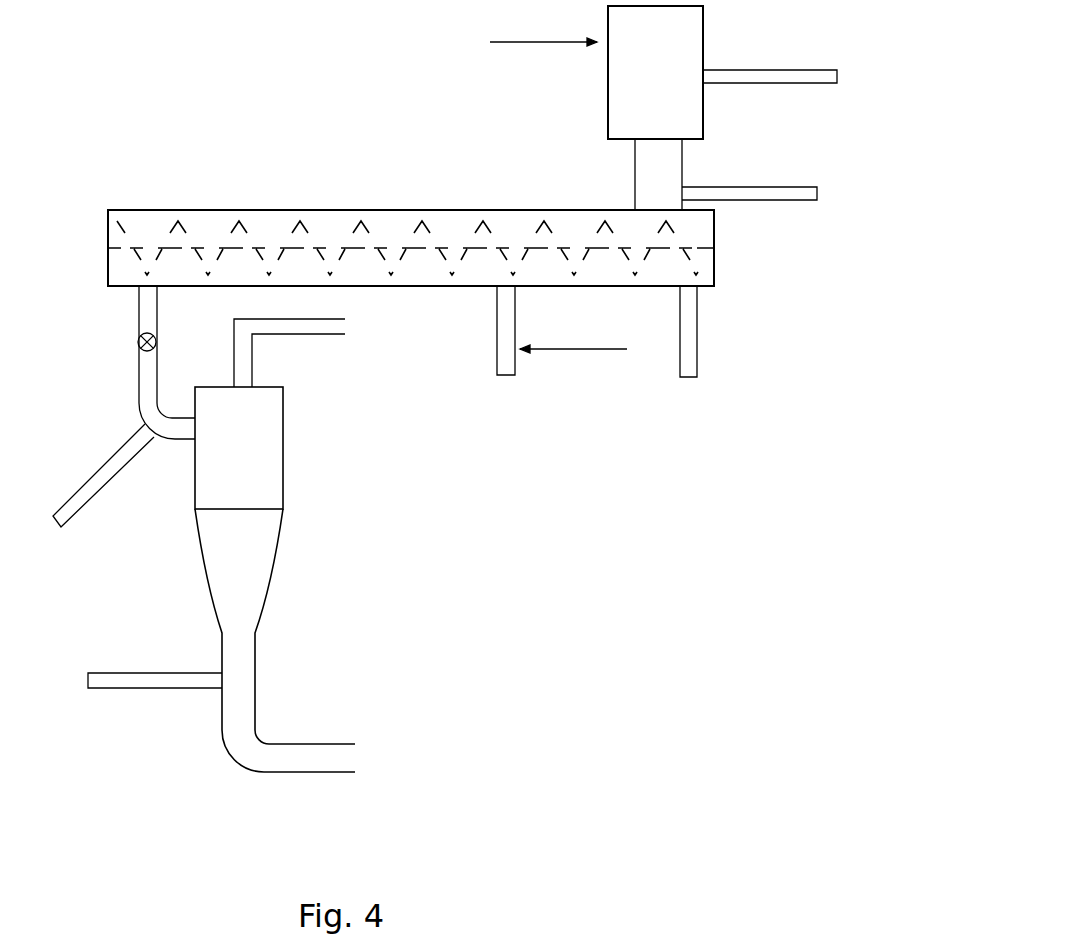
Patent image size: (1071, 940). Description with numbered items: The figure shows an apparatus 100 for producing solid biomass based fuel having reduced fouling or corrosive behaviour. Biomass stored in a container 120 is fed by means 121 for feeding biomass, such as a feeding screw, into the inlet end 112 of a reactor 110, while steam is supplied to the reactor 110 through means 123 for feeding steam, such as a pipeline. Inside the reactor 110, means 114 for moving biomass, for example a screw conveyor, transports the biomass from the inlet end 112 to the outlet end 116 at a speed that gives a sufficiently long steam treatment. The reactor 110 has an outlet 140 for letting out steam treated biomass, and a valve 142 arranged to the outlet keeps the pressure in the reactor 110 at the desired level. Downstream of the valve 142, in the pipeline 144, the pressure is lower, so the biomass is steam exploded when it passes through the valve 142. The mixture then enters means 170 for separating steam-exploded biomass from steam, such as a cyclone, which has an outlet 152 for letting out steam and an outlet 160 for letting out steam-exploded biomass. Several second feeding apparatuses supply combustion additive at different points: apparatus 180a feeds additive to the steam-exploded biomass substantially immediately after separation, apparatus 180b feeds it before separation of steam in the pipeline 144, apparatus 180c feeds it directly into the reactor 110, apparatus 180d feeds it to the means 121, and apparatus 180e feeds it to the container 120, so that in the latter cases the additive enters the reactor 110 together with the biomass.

The apparatus 100 is at (447, 517).
The reactor 110 is at (328, 223).
The inlet end 112 is at (493, 177).
The means for moving biomass 114 is at (233, 222).
The outlet end 116 is at (135, 180).
The container 120 is at (677, 77).
The means for feeding biomass 121 is at (645, 175).
The means for feeding steam 123 is at (503, 348).
The outlet 140 is at (143, 297).
The valve 142 is at (138, 340).
The pipeline 144 is at (147, 372).
The outlet for letting out steam 152 is at (322, 337).
The outlet for letting out steam-exploded biomass 160 is at (233, 627).
The means for separating steam-exploded biomass from steam 170 is at (265, 467).
The second feeding apparatus 180a is at (147, 680).
The second feeding apparatus 180b is at (80, 498).
The second feeding apparatus 180c is at (688, 361).
The second feeding apparatus 180d is at (777, 193).
The second feeding apparatus 180e is at (797, 78).